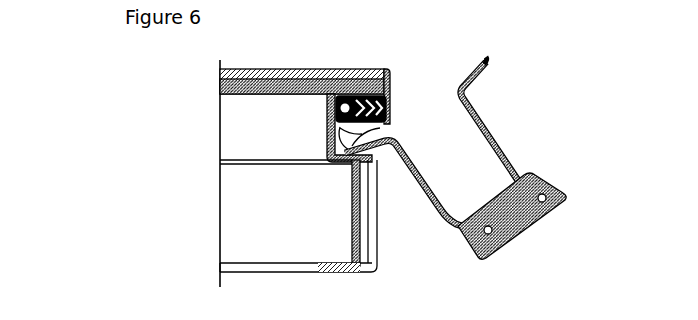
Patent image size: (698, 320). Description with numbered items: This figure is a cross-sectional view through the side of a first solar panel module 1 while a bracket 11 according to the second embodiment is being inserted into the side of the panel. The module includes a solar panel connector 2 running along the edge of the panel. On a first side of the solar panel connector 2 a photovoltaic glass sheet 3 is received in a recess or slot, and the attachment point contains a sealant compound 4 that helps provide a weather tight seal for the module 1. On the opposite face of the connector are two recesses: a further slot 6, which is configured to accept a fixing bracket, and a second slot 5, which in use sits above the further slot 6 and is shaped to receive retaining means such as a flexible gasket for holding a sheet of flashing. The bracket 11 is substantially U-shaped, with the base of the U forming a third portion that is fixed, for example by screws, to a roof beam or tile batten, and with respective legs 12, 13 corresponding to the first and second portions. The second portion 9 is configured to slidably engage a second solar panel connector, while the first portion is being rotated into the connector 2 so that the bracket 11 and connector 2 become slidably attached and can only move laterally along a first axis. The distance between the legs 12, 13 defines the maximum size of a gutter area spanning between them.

The solar panel module 1 is at (219, 151).
The solar panel connector 2 is at (372, 273).
The photovoltaic glass sheet 3 is at (262, 80).
The sealant compound 4 is at (346, 74).
The second slot/recess 5 is at (388, 104).
The further slot 6 is at (362, 135).
The second portion 9 is at (483, 65).
The bracket 11 is at (527, 174).
The leg 12 is at (426, 194).
The leg 13 is at (488, 110).